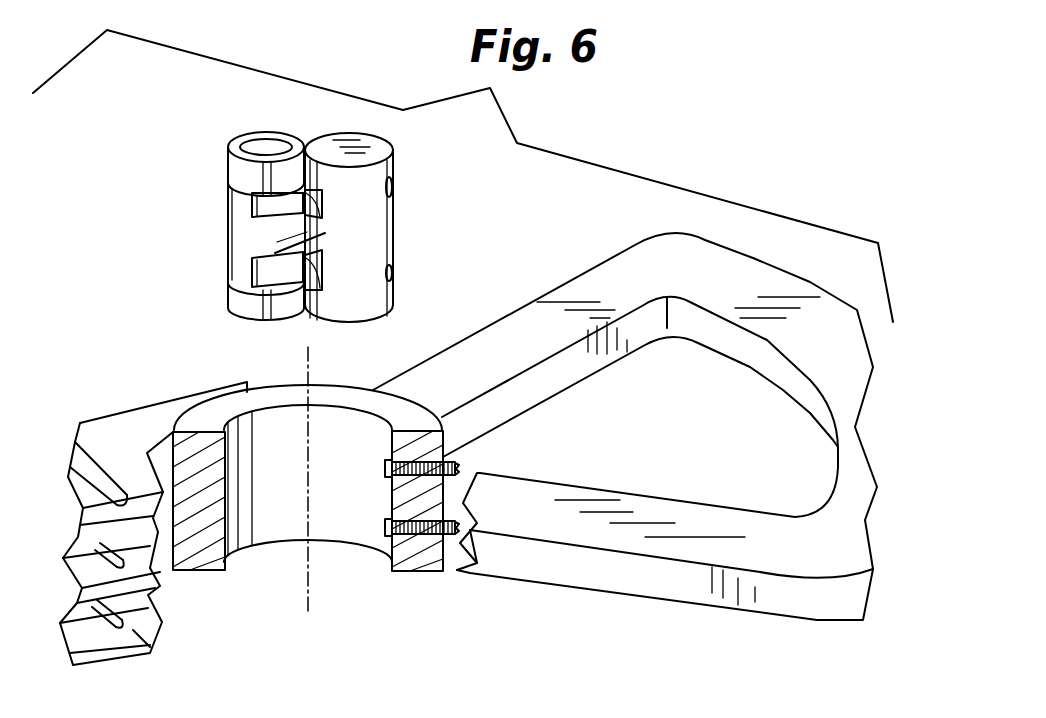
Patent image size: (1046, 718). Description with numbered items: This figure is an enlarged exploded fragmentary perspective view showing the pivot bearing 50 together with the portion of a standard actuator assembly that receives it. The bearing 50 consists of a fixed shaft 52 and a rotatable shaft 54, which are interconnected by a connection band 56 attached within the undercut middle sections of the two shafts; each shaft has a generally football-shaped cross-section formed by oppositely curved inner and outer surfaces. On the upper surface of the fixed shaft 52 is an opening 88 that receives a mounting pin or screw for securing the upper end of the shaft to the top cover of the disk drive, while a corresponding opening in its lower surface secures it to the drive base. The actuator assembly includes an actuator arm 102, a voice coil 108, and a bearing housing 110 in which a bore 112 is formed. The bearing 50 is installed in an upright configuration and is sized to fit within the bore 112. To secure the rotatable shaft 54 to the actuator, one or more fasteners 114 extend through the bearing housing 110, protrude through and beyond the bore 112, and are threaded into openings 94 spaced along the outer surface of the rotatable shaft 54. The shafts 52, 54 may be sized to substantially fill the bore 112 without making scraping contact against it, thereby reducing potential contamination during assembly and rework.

The pivot bearing 50 is at (337, 124).
The fixed shaft 52 is at (237, 172).
The rotatable shaft 54 is at (375, 235).
The connection band 56 is at (235, 237).
The opening 88 is at (265, 145).
The openings 94 is at (394, 187).
The actuator arm 102 is at (103, 437).
The voice coil 108 is at (578, 292).
The bearing housing 110 is at (357, 395).
The bore 112 is at (305, 498).
The fasteners 114 is at (387, 531).